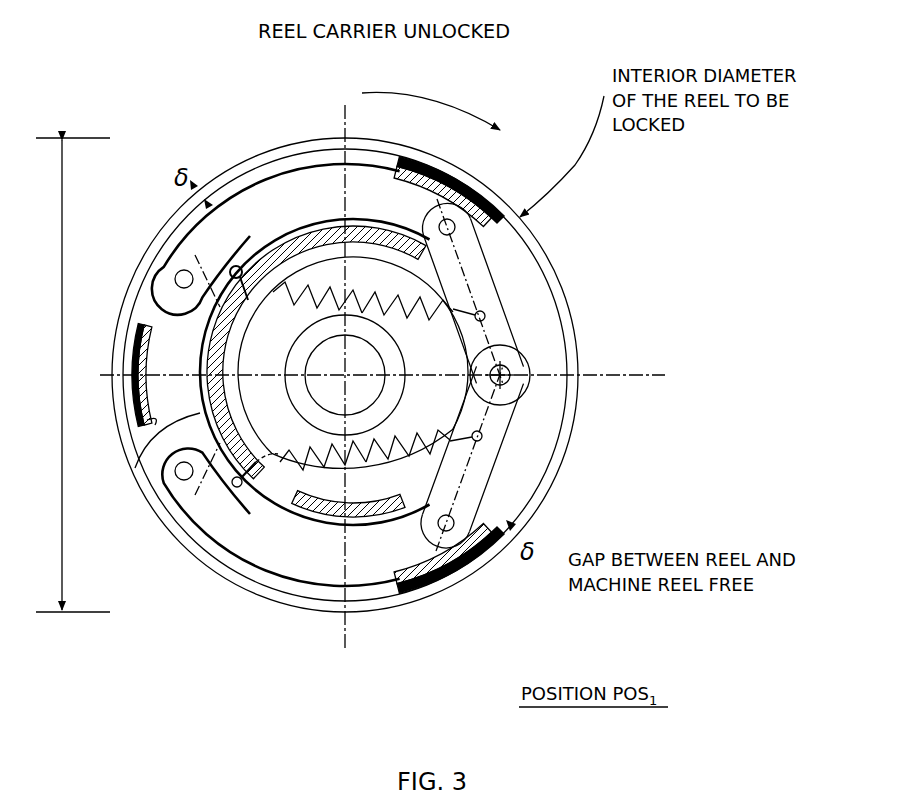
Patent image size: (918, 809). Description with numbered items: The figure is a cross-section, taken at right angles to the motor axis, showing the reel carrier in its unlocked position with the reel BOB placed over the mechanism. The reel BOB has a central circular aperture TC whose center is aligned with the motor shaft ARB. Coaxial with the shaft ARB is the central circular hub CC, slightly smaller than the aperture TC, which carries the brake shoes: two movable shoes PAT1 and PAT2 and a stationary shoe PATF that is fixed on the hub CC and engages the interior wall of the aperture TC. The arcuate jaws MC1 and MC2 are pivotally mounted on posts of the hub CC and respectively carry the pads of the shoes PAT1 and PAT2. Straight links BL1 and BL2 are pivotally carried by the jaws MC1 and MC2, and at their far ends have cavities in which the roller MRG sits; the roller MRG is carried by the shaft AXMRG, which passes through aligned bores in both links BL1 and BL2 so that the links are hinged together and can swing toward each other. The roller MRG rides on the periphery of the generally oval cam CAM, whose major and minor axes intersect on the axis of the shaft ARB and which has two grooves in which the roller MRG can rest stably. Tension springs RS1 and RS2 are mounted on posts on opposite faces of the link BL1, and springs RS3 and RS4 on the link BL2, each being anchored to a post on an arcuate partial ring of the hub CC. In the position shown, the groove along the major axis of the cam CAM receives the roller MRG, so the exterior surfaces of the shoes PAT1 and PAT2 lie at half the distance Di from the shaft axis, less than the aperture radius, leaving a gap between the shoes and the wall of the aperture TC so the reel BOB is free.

The reel BOB is at (540, 242).
The cam CAM is at (432, 272).
The motor shaft ARB is at (308, 425).
The first jaw MC1 is at (268, 207).
The second jaw MC2 is at (303, 582).
The hub CC is at (142, 452).
The first movable brake shoe PAT1 is at (425, 165).
The second movable brake shoe PAT2 is at (412, 585).
The stationary brake shoe PATF is at (130, 328).
The first link BL1 is at (515, 327).
The second link BL2 is at (498, 472).
The roller MRG is at (530, 382).
The roller shaft AXMRG is at (506, 375).
The central circular aperture TC is at (514, 454).
The first tension spring RS1 is at (355, 317).
The second tension spring RS2 is at (415, 322).
The third tension spring RS3 is at (358, 436).
The fourth tension spring RS4 is at (416, 432).
The shoe spacing diameter Di is at (73, 375).